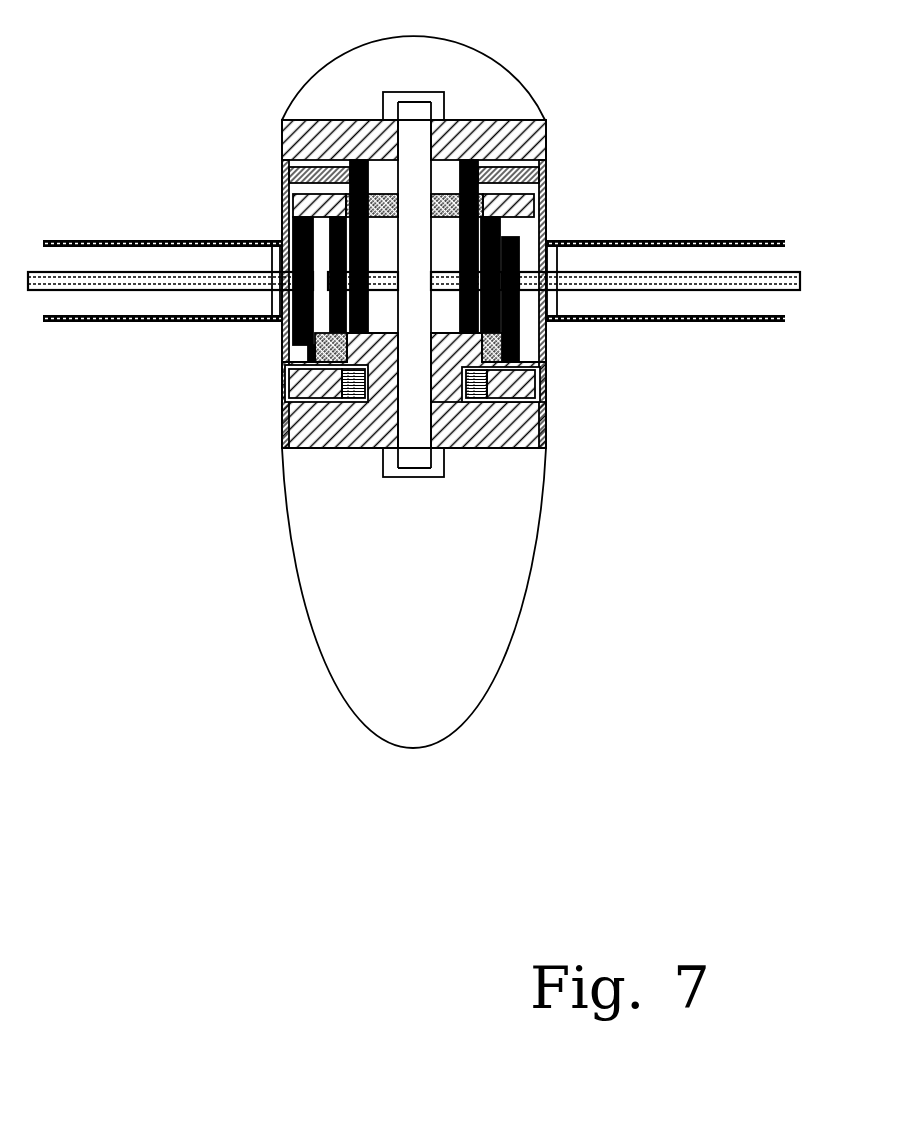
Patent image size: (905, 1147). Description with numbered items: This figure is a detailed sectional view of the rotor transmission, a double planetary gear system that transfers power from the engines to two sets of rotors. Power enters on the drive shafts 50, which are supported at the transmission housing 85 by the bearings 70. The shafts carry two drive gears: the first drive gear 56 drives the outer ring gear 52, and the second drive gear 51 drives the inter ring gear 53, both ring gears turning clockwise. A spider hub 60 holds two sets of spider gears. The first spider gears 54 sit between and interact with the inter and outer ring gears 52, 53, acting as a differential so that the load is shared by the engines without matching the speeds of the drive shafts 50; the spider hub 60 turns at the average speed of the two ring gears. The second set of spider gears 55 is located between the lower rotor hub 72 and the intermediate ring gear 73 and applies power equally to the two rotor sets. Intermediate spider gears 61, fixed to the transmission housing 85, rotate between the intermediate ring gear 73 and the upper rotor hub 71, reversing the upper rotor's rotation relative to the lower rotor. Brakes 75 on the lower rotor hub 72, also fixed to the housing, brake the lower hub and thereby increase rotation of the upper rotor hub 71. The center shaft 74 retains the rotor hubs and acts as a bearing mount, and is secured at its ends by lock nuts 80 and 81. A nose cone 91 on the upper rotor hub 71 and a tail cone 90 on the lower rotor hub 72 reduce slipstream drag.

The drive shafts 50 is at (615, 335).
The second drive gear 51 is at (666, 238).
The outer ring gear 52 is at (467, 198).
The inter ring gear 53 is at (453, 304).
The first spider gears 54 is at (423, 361).
The second set of spider gears 55 is at (429, 390).
The first drive gear 56 is at (241, 271).
The spider hub 60 is at (213, 207).
The intermediate spider gears 61 is at (411, 212).
The bearings 70 is at (162, 309).
The upper rotor hub 71 is at (460, 105).
The lower rotor hub 72 is at (488, 460).
The intermediate ring gear 73 is at (308, 169).
The center shaft 74 is at (383, 329).
The brakes 75 is at (432, 467).
The lock nut 80 is at (473, 67).
The lock nut 81 is at (443, 505).
The transmission housing 85 is at (461, 291).
The tail cone 90 is at (456, 598).
The nose cone 91 is at (384, 63).